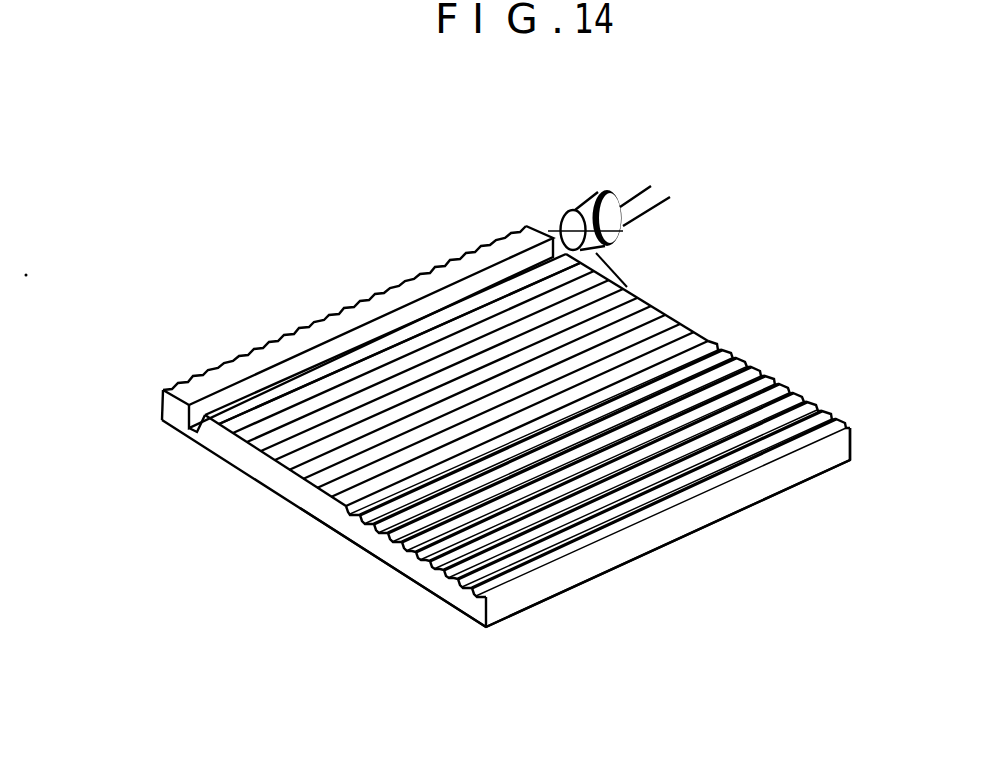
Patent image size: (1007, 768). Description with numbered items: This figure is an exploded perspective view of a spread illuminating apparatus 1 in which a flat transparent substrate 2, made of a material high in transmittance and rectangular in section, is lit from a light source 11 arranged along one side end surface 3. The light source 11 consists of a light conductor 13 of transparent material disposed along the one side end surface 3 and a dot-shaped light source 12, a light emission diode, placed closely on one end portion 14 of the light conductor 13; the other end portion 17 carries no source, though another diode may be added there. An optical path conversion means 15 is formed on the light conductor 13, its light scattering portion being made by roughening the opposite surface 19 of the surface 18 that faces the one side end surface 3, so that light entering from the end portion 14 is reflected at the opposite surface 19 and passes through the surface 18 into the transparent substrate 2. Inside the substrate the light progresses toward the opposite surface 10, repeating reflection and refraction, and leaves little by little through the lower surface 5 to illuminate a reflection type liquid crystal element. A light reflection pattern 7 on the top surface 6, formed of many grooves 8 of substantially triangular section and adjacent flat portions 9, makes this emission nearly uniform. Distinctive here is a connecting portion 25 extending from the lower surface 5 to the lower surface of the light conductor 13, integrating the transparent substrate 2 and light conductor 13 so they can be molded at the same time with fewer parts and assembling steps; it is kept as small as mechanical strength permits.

The spread illuminating apparatus 1 is at (186, 571).
The transparent substrate 2 is at (318, 500).
The one side end surface 3 is at (220, 437).
The lower surface 5 is at (385, 562).
The top surface 6 is at (603, 310).
The light reflection pattern 7 is at (820, 268).
The grooves 8 is at (767, 374).
The flat portions 9 is at (705, 332).
The opposite surface 10 is at (680, 528).
The light source 11 is at (593, 134).
The dot-shaped light source 12 is at (599, 192).
The light conductor 13 is at (515, 225).
The one end portion 14 is at (623, 231).
The optical path conversion means 15 is at (352, 300).
The other end portion 17 is at (162, 407).
The surface 18 is at (320, 353).
The opposite surface 19 is at (403, 279).
The connecting portion 25 is at (200, 432).